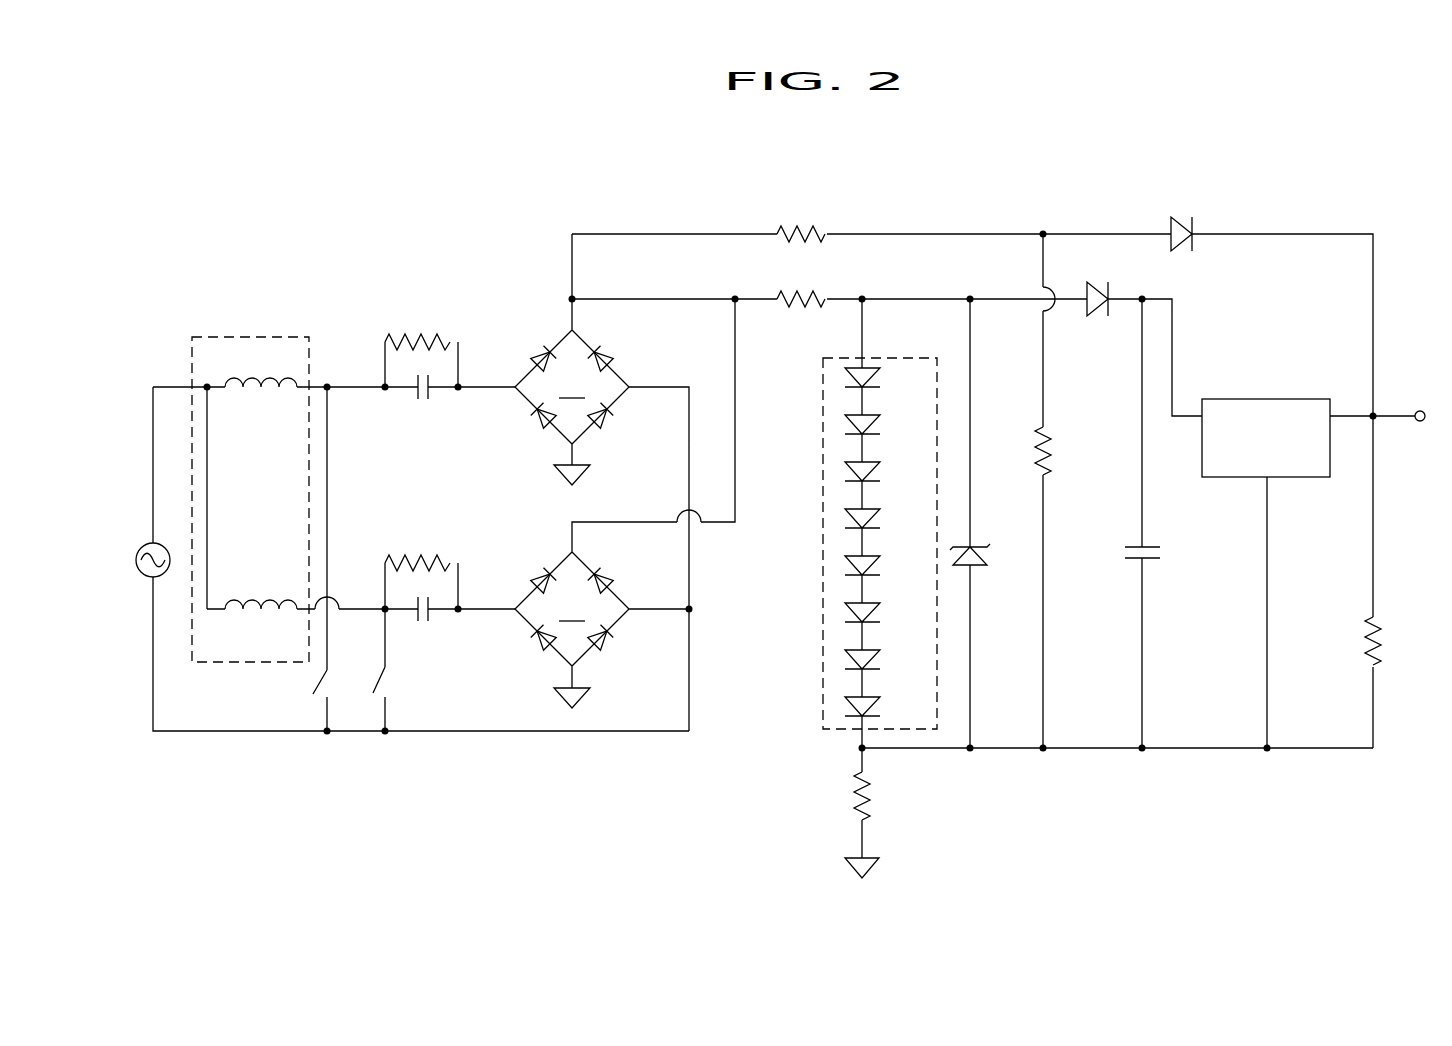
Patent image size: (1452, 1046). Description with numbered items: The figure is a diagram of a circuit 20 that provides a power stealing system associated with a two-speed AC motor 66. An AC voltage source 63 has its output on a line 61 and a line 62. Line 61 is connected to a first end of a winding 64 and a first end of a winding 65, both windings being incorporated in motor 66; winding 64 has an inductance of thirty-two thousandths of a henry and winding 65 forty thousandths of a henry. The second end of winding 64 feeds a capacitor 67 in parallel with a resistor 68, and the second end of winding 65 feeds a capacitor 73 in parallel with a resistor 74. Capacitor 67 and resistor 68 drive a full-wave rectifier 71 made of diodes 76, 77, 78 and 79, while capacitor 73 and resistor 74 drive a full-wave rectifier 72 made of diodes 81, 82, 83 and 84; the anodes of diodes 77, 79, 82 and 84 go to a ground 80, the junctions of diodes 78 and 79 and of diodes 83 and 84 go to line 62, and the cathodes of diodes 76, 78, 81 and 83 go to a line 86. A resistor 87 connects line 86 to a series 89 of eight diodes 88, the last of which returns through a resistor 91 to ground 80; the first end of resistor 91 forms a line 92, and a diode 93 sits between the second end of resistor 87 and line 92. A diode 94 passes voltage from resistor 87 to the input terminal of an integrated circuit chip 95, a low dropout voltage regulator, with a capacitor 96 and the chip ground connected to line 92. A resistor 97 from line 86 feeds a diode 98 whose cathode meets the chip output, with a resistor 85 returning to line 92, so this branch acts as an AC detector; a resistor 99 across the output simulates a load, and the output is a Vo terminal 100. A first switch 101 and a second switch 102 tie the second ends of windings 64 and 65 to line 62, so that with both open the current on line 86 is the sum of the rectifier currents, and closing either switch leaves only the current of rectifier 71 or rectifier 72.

The circuit 20 is at (1301, 179).
The line 61 is at (153, 467).
The line 62 is at (153, 655).
The AC voltage source 63 is at (135, 559).
The winding 64 is at (262, 381).
The winding 65 is at (262, 604).
The two-speed AC motor 66 is at (254, 336).
The capacitor 67 is at (413, 396).
The resistor 68 is at (401, 340).
The full-wave rectifier 71 is at (588, 482).
The full-wave rectifier 72 is at (611, 493).
The capacitor 73 is at (411, 617).
The resistor 74 is at (401, 558).
The diode 76 is at (539, 348).
The diode 77 is at (540, 425).
The diode 78 is at (608, 345).
The diode 79 is at (610, 428).
The ground 80 is at (588, 484).
The diode 81 is at (539, 571).
The diode 82 is at (540, 648).
The diode 83 is at (608, 567).
The diode 84 is at (610, 648).
The resistor 85 is at (1034, 450).
The line 86 is at (698, 300).
The resistor 87 is at (774, 300).
The diode 88 is at (882, 376).
The series of eight diodes 89 is at (822, 591).
The resistor 91 is at (854, 795).
The line 92 is at (1099, 750).
The diode 93 is at (985, 556).
The diode 94 is at (1100, 318).
The integrated circuit chip 95 is at (1265, 399).
The capacitor 96 is at (1153, 547).
The resistor 97 is at (809, 234).
The diode 98 is at (1185, 220).
The resistor 99 is at (1364, 641).
The Vo terminal 100 is at (1419, 423).
The first switch 101 is at (311, 688).
The second switch 102 is at (381, 688).